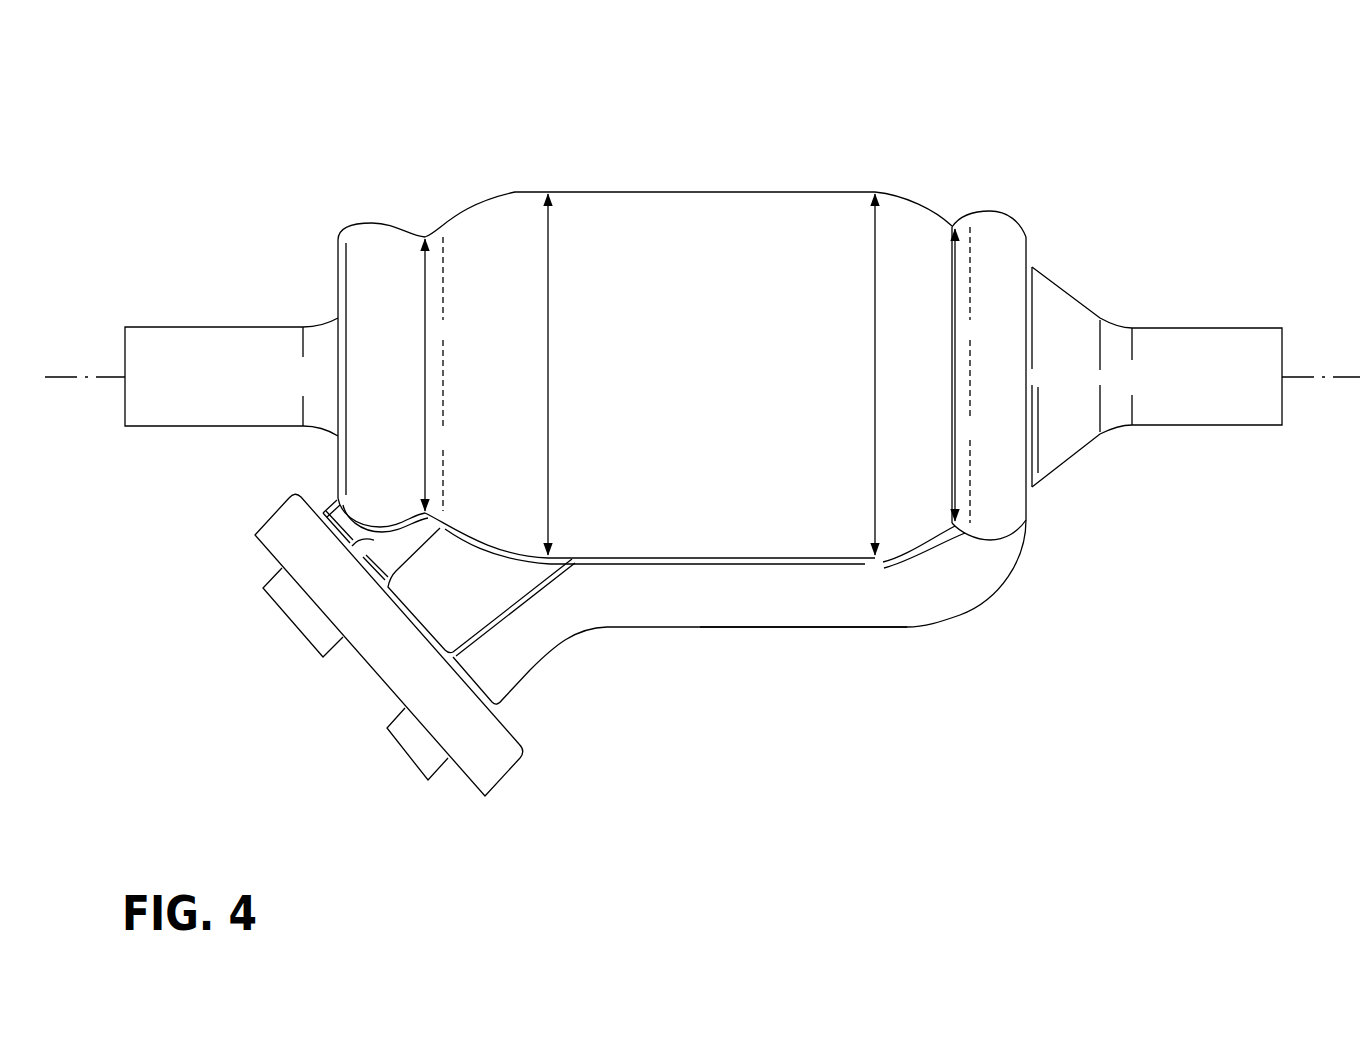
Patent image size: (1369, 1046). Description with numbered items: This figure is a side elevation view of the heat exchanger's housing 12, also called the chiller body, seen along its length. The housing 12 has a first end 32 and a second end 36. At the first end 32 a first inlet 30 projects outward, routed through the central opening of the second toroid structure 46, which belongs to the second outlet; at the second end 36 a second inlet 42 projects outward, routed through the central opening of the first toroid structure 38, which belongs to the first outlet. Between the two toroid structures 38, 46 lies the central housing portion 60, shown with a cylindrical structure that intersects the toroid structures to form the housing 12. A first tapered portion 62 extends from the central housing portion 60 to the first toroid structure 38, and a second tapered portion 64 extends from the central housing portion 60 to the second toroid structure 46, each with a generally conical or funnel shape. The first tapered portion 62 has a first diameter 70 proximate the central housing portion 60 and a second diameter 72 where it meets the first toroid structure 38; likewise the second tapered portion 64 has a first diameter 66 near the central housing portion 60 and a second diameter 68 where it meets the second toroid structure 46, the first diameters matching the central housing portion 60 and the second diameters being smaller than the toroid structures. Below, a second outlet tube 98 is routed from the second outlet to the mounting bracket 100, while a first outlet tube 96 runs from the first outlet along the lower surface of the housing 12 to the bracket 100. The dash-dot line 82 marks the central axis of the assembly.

The housing 12 is at (723, 630).
The first inlet 30 is at (187, 345).
The first end 32 is at (345, 160).
The second end 36 is at (1022, 192).
The first toroid structure 38 is at (1020, 226).
The second inlet 42 is at (1208, 335).
The second toroid structure 46 is at (363, 226).
The central housing portion 60 is at (713, 192).
The first tapered portion 62 is at (940, 213).
The second tapered portion 64 is at (480, 200).
The first diameter 66 is at (556, 248).
The second diameter 68 is at (423, 308).
The first diameter 70 is at (873, 277).
The second diameter 72 is at (952, 270).
The central axis 82 is at (1306, 378).
The first outlet tube 96 is at (793, 600).
The second outlet tube 98 is at (292, 618).
The mounting bracket 100 is at (505, 763).